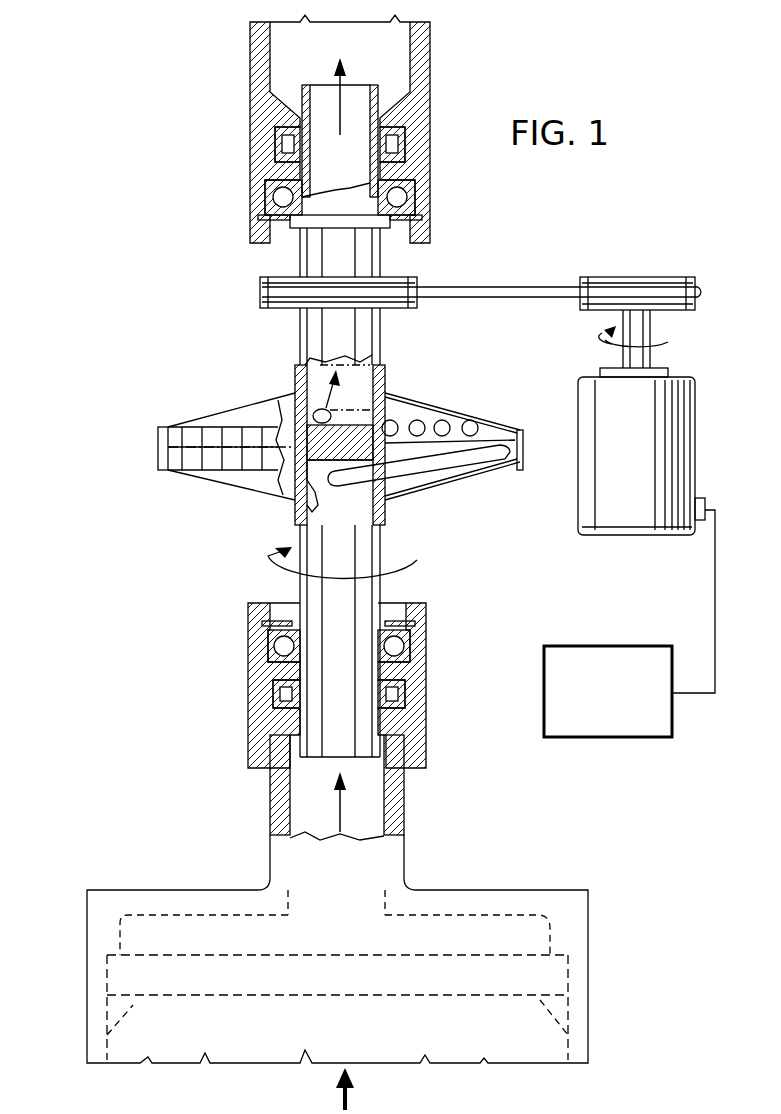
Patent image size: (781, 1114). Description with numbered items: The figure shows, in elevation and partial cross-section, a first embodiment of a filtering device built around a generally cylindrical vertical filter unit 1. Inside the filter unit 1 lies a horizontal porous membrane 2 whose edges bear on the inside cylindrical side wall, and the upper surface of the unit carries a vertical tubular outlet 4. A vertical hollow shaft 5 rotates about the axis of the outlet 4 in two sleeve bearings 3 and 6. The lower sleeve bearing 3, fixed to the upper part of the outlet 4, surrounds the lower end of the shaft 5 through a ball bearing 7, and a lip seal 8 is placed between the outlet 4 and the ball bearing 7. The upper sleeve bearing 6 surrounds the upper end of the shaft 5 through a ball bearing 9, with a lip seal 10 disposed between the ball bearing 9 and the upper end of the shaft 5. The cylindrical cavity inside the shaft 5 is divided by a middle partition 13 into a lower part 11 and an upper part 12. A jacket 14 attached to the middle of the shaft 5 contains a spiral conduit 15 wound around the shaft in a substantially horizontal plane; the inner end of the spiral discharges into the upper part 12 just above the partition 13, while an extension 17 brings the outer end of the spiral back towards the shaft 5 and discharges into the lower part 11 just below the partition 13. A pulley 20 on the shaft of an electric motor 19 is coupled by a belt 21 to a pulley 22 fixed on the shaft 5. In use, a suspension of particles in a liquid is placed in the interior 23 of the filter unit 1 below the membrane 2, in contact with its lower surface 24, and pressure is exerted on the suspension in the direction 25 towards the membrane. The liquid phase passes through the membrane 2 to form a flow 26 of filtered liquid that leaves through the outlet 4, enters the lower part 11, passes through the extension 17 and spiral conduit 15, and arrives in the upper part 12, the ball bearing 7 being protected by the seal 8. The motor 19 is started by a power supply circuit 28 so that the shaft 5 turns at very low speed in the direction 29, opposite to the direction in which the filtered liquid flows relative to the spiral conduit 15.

The filter unit 1 is at (578, 910).
The porous membrane 2 is at (525, 975).
The sleeve bearing 3 is at (262, 722).
The tubular outlet 4 is at (275, 810).
The hollow shaft 5 is at (388, 547).
The sleeve bearing 6 is at (262, 105).
The ball bearing 7 is at (284, 642).
The lip seal 8 is at (280, 692).
The ball bearing 9 is at (283, 198).
The lip seal 10 is at (277, 143).
The lower part of the cavity 11 is at (315, 478).
The upper part of the cavity 12 is at (375, 388).
The middle partition 13 is at (322, 443).
The jacket 14 is at (160, 437).
The spiral conduit 15 is at (462, 430).
The extension 17 is at (417, 467).
The electric motor 19 is at (672, 393).
The pulley 20 is at (660, 283).
The belt 21 is at (498, 292).
The pulley 22 is at (270, 282).
The interior 23 is at (510, 1047).
The lower surface 24 is at (170, 998).
The direction of pressure 25 is at (355, 1098).
The flow of filtered liquid 26 is at (345, 808).
The power supply circuit 28 is at (613, 660).
The direction of rotation 29 is at (313, 558).